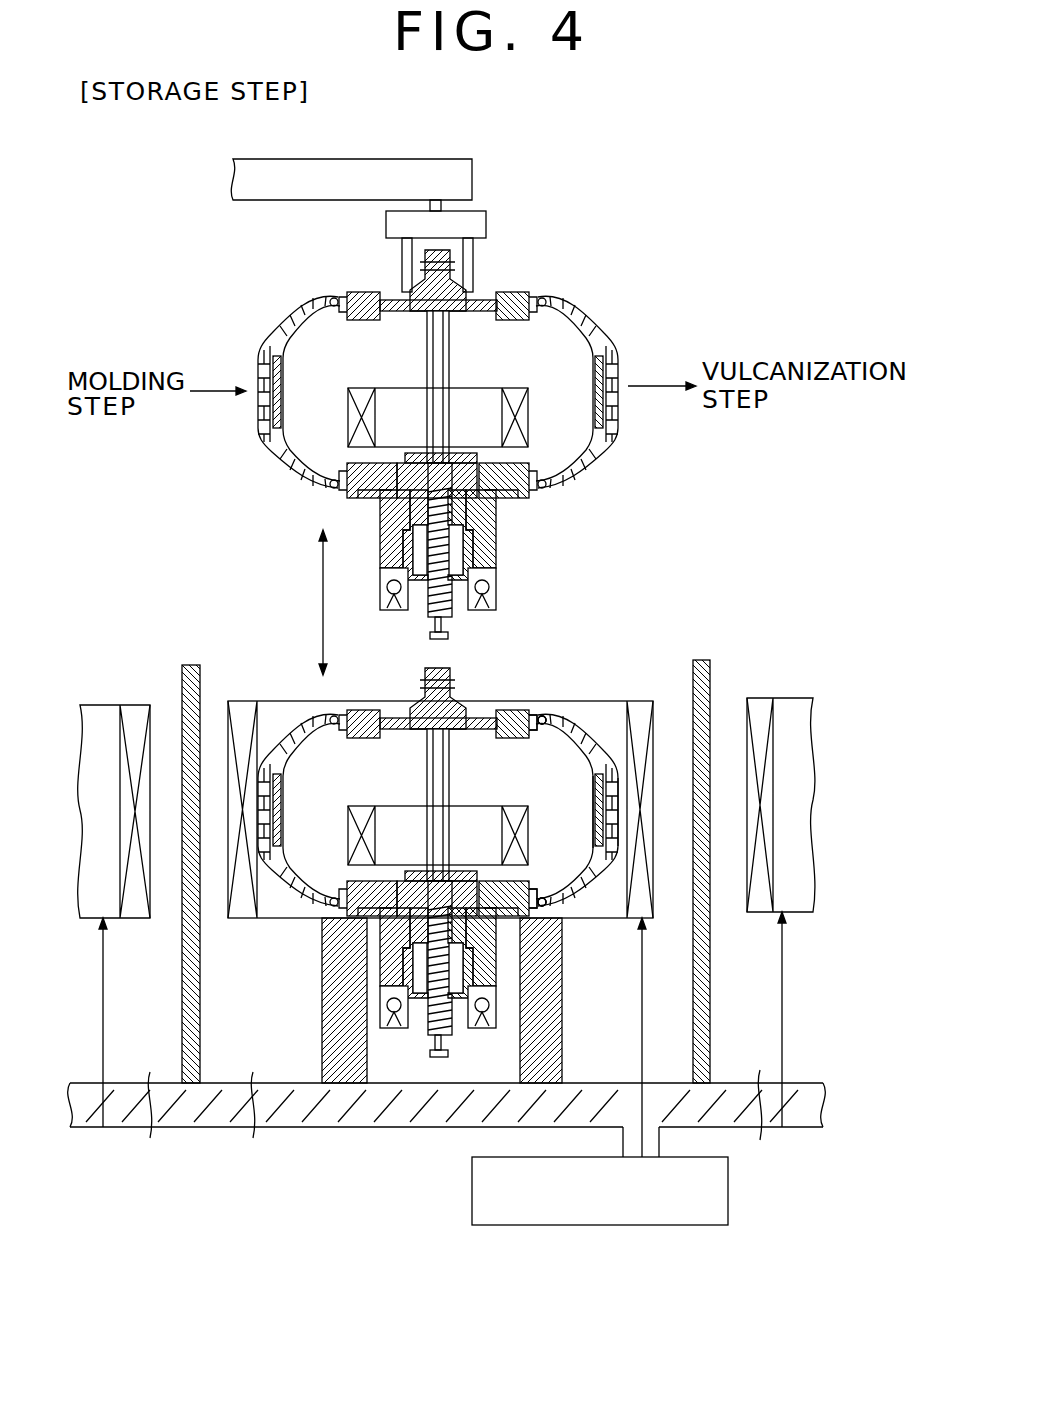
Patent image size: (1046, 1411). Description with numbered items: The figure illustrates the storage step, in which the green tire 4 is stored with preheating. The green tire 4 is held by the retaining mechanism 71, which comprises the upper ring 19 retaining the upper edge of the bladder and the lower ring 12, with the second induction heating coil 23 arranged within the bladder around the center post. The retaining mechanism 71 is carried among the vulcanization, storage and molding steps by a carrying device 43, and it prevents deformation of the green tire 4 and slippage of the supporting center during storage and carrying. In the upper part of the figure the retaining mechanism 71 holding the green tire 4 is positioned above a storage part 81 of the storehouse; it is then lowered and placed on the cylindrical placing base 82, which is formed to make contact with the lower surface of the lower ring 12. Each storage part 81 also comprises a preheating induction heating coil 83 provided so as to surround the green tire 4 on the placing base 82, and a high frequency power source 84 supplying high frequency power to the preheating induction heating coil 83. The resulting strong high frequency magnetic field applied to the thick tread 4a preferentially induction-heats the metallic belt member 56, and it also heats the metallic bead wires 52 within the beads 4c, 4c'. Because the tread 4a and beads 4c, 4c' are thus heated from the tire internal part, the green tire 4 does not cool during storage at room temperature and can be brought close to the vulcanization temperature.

The green tire 4 is at (291, 460).
The tread 4a is at (612, 830).
The bead 4c is at (578, 923).
The bead 4c' is at (568, 694).
The lower ring 12 is at (524, 502).
The upper ring 19 is at (480, 294).
The second induction heating coil 23 is at (485, 390).
The carrying device 43 is at (440, 160).
The bead wires 52 is at (542, 727).
The belt member 56 is at (612, 351).
The retaining mechanism 71 is at (536, 281).
The storage part 81 is at (447, 1121).
The placing base 82 is at (548, 1038).
The preheating induction heating coil 83 is at (103, 712).
The high frequency power source 84 is at (472, 1185).